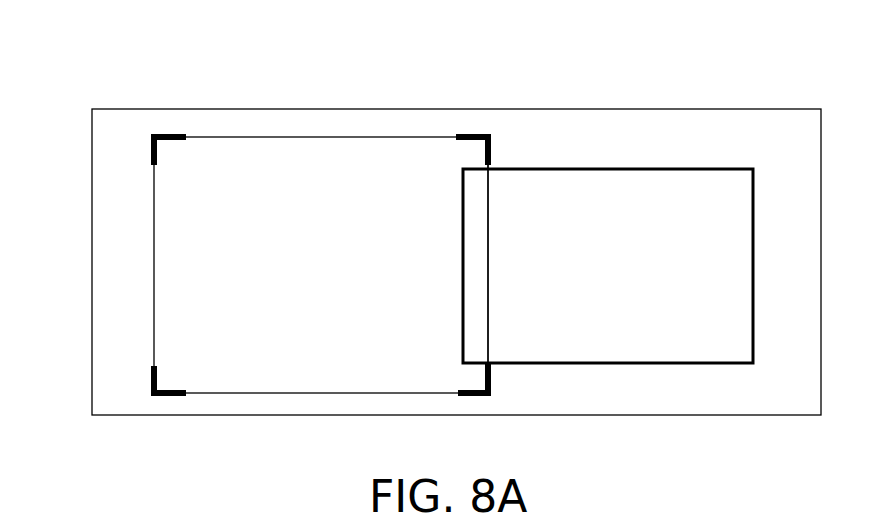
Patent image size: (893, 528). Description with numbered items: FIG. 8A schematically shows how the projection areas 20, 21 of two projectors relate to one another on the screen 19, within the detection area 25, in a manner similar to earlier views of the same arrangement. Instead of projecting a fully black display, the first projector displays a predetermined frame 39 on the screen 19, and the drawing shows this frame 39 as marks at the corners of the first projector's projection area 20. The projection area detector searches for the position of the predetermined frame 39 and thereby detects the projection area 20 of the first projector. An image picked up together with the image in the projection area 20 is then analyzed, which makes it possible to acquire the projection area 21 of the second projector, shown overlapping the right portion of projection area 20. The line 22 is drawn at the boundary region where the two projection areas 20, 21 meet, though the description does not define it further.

The screen 19 is at (145, 87).
The projection area of the first projector 20 is at (210, 227).
The projection area of the second projector 21 is at (633, 228).
The edge line 22 is at (472, 228).
The detection area 25 is at (92, 359).
The predetermined frame 39 is at (162, 137).